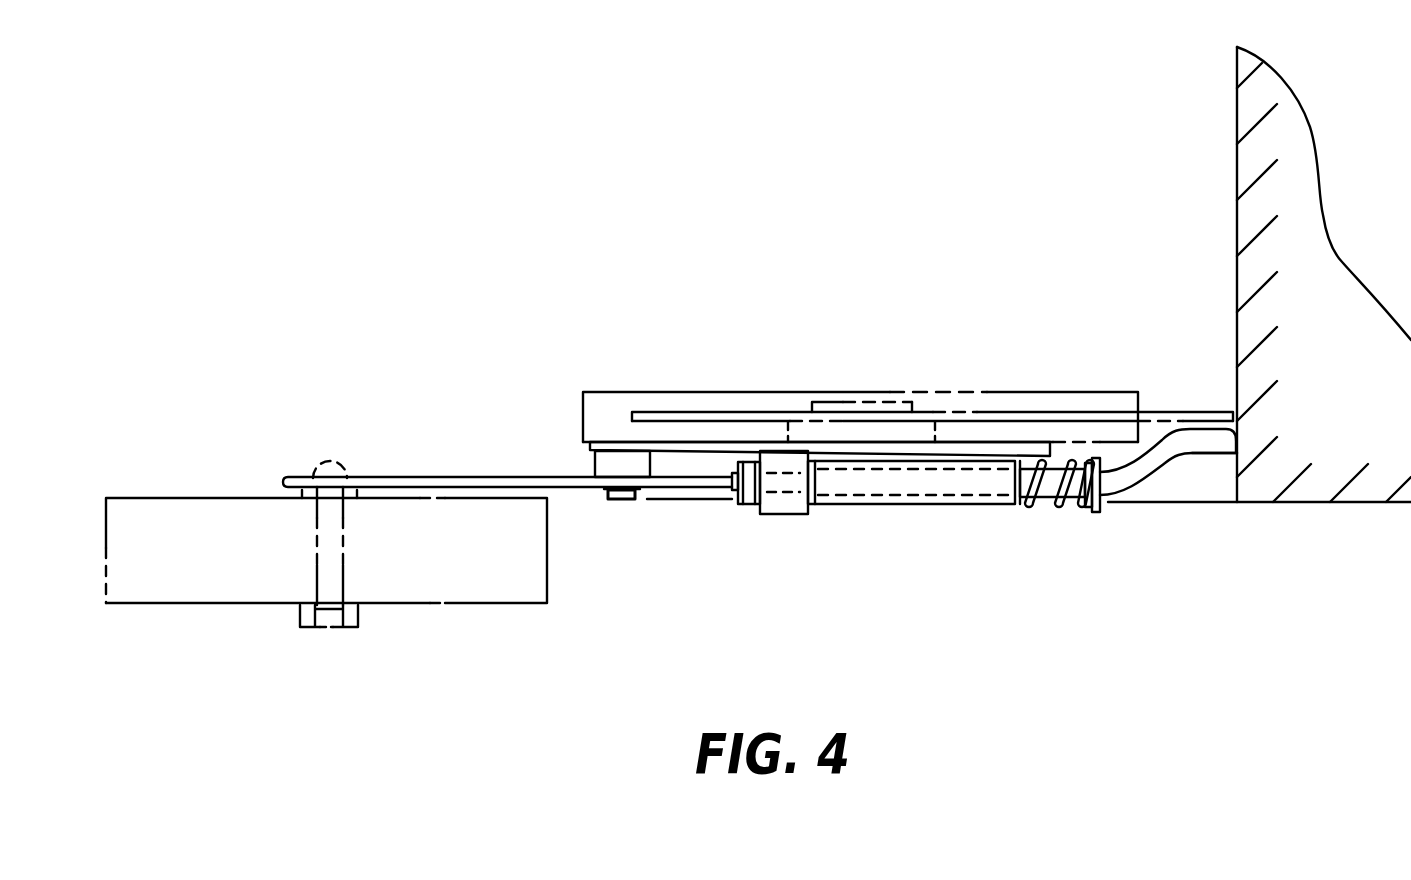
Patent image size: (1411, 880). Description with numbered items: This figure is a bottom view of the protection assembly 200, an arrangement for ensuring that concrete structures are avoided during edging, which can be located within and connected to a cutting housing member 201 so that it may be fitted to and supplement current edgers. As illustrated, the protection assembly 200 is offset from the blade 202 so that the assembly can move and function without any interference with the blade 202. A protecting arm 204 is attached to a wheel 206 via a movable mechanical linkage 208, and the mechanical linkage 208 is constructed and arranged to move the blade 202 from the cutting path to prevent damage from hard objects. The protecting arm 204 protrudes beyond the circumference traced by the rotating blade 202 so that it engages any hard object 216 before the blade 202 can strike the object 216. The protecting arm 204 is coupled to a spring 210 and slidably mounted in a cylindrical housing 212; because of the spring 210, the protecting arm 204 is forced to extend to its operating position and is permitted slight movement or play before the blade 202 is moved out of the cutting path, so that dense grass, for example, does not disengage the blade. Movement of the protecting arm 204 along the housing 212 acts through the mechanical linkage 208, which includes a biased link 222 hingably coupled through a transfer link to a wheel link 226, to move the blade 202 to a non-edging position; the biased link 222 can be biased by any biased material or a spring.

The protection assembly 200 is at (1113, 285).
The cutting housing member 201 is at (706, 392).
The blade 202 is at (1217, 413).
The protecting arm 204 is at (1216, 453).
The wheel 206 is at (510, 605).
The mechanical linkage 208 is at (909, 552).
The spring 210 is at (1047, 508).
The cylindrical housing 212 is at (935, 508).
The hard object 216 is at (1368, 480).
The biased link 222 is at (583, 448).
The wheel link 226 is at (450, 477).